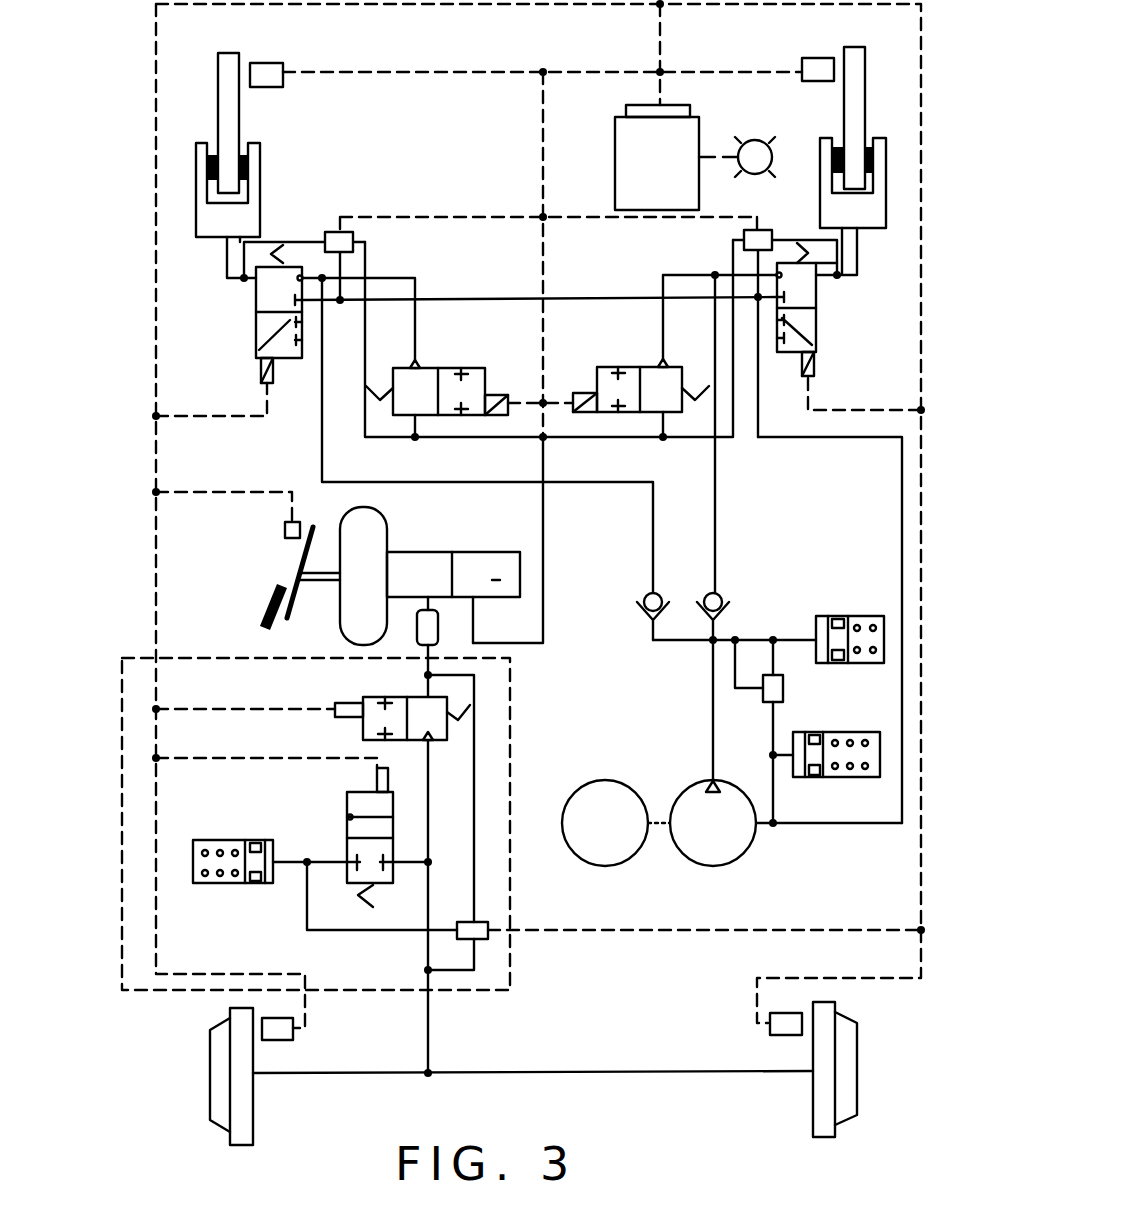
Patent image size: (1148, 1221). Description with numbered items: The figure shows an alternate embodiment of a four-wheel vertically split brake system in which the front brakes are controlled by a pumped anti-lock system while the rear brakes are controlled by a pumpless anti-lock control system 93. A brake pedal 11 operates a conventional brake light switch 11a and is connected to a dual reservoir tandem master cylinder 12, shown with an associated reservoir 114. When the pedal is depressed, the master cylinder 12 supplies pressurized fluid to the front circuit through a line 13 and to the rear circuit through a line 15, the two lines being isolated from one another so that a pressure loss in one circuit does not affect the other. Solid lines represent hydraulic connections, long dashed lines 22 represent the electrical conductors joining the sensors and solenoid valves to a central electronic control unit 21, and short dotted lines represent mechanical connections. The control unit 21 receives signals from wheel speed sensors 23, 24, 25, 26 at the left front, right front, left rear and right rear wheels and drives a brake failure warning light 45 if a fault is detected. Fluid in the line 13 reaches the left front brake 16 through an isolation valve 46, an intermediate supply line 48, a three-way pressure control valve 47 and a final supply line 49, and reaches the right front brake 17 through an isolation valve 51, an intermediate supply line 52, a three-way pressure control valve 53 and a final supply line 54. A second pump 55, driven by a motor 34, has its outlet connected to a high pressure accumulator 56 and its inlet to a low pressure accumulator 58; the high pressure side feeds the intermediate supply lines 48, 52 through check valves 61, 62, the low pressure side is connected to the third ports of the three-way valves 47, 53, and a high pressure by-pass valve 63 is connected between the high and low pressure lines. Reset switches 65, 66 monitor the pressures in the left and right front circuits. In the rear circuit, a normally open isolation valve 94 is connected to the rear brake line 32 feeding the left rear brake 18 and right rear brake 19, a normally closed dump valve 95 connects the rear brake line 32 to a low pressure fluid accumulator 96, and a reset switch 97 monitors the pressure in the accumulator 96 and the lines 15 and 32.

The brake pedal 11 is at (262, 606).
The brake light switch 11a is at (285, 530).
The dual reservoir tandem master cylinder 12 is at (432, 552).
The line 13 is at (546, 500).
The line 15 is at (433, 667).
The left front brake 16 is at (195, 170).
The right front brake 17 is at (890, 162).
The left rear brake 18 is at (200, 1078).
The right rear brake 19 is at (862, 1076).
The electronic control unit 21 is at (676, 178).
The dashed lines 22 is at (150, 350).
The wheel speed sensor 23 is at (283, 70).
The wheel speed sensor 24 is at (818, 58).
The wheel speed sensor 25 is at (282, 1040).
The wheel speed sensor 26 is at (770, 1032).
The rear brake line 32 is at (458, 1074).
The motor 34 is at (600, 780).
The brake failure warning light 45 is at (762, 138).
The isolation valve 46 is at (445, 368).
The three-way pressure control valve 47 is at (257, 318).
The intermediate supply line 48 is at (418, 290).
The final supply line 49 is at (228, 268).
The isolation valve 51 is at (632, 367).
The intermediate supply line 52 is at (663, 288).
The three-way pressure control valve 53 is at (822, 318).
The final supply line 54 is at (862, 256).
The second pump 55 is at (747, 848).
The high pressure accumulator 56 is at (852, 616).
The low pressure accumulator 58 is at (835, 777).
The check valve 61 is at (645, 592).
The check valve 62 is at (720, 592).
The high pressure by-pass valve 63 is at (785, 688).
The reset switch 65 is at (332, 232).
The reset switch 66 is at (744, 235).
The pumpless anti-lock control system 93 is at (118, 692).
The isolation valve 94 is at (395, 697).
The dump valve 95 is at (347, 825).
The low pressure fluid accumulator 96 is at (228, 883).
The reset switch 97 is at (478, 932).
The fluid reservoir 114 is at (440, 628).